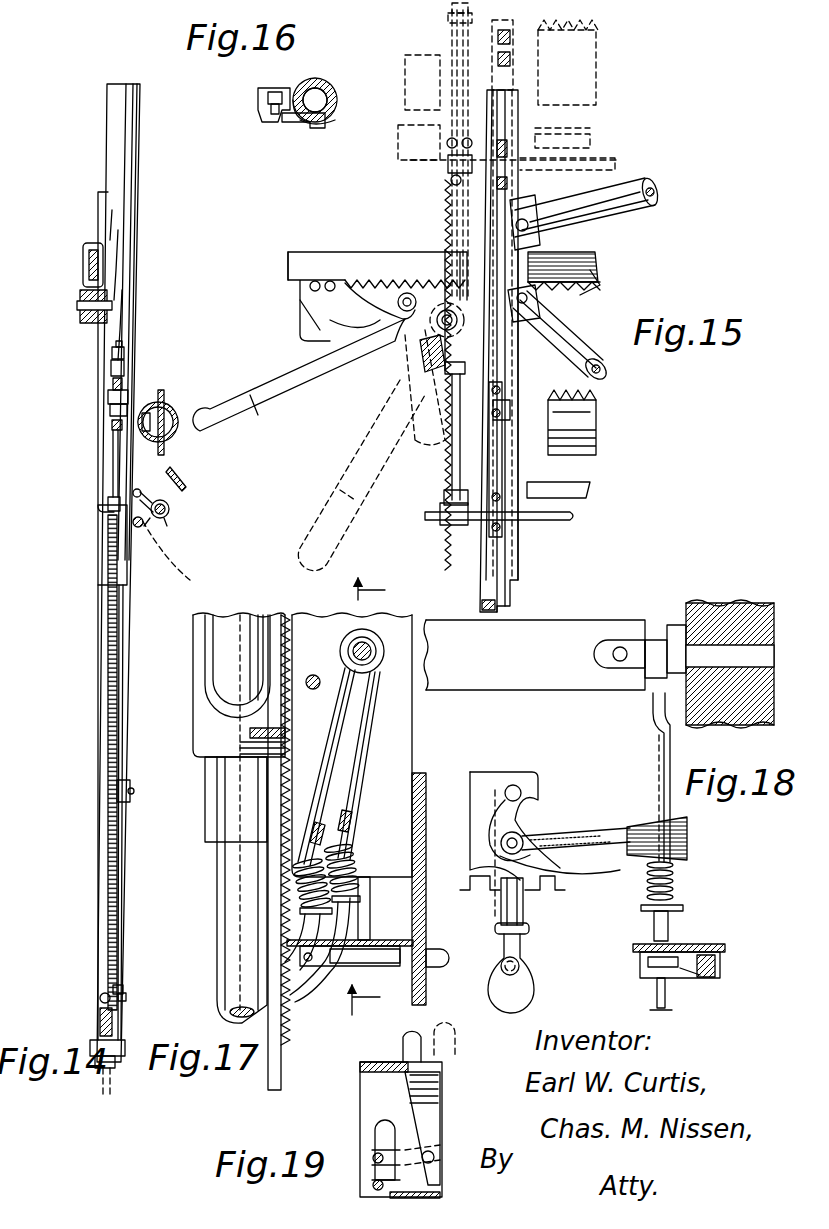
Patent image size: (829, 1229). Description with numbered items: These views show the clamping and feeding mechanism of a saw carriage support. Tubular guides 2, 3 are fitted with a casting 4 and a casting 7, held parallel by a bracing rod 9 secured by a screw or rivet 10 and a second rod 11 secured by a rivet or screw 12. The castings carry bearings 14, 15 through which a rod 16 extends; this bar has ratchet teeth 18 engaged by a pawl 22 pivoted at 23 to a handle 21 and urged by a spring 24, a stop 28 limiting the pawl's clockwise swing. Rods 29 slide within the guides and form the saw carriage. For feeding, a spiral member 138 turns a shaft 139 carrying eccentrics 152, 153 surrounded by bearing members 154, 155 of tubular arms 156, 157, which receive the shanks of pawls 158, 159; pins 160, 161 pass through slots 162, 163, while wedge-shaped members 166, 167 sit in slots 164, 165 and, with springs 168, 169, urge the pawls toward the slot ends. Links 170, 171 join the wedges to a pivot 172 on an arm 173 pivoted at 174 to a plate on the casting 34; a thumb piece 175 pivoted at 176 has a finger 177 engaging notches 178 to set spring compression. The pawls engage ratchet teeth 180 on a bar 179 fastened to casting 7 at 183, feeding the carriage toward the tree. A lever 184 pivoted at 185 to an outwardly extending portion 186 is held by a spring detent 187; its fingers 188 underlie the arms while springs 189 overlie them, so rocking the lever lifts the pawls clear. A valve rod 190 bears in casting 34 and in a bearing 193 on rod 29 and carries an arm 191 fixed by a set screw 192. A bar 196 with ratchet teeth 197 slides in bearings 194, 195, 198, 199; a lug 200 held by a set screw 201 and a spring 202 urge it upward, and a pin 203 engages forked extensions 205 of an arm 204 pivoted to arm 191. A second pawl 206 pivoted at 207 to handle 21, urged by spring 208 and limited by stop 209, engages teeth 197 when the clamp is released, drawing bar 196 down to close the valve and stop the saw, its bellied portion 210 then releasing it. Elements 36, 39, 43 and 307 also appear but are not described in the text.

In FIG. 14, the tubular guide 2 is at (135, 173).
In FIG. 16, the tubular guide 2 is at (335, 100).
In FIG. 15, the tubular guide 2 is at (520, 128).
In FIG. 17, the tubular guide 3 is at (210, 803).
In FIG. 14, the casting 4 is at (97, 218).
In FIG. 16, the casting 4 is at (338, 108).
In FIG. 15, the casting 4 is at (520, 478).
In FIG. 17, the casting 7 is at (200, 744).
In FIG. 15, the bracing rod 9 is at (640, 195).
In FIG. 15, the screw or rivet 10 is at (578, 205).
In FIG. 17, the rod 11 is at (230, 638).
In FIG. 15, the rivet or screw 12 is at (548, 333).
In FIG. 14, the bearing 14 is at (97, 245).
In FIG. 15, the bearing 14 is at (540, 265).
In FIG. 14, the bearing 15 is at (78, 305).
In FIG. 15, the bearing 15 is at (520, 272).
In FIG. 14, the rod 16 is at (90, 262).
In FIG. 15, the rod 16 is at (596, 270).
In FIG. 15, the ratchet teeth 18 is at (592, 282).
In FIG. 17, the ratchet teeth 18 is at (380, 1000).
In FIG. 15, the handle 21 is at (300, 345).
In FIG. 15, the pawl 22 is at (370, 290).
In FIG. 15, the pivot 23 is at (410, 295).
In FIG. 15, the spring 24 is at (375, 308).
In FIG. 15, the stop 28 is at (445, 310).
In FIG. 14, the rod 29 is at (118, 945).
In FIG. 16, the rod 29 is at (325, 95).
In FIG. 15, the rod 29 is at (515, 26).
In FIG. 17, the rod 29 is at (225, 927).
In FIG. 17, the casting 34 is at (408, 733).
In FIG. 18, the casting 34 is at (735, 614).
In FIG. 14, the clamp block 36 is at (178, 410).
In FIG. 15, the clamp block 36 is at (592, 80).
In FIG. 17, the side plate 39 is at (420, 878).
In FIG. 14, the serrated bar 43 is at (162, 395).
In FIG. 15, the serrated bar 43 is at (570, 55).
In FIG. 14, the spiral member 138 is at (185, 492).
In FIG. 15, the spiral member 138 is at (585, 135).
In FIG. 18, the spiral member 138 is at (630, 640).
In FIG. 18, the shaft 139 is at (655, 640).
In FIG. 17, the eccentric 152 is at (352, 645).
In FIG. 17, the eccentric 153 is at (352, 650).
In FIG. 18, the bearing member 154 is at (700, 625).
In FIG. 18, the bearing member 155 is at (662, 642).
In FIG. 18, the arm 156 is at (658, 740).
In FIG. 18, the arm 157 is at (658, 716).
In FIG. 17, the pawl 158 is at (322, 985).
In FIG. 18, the pawl 158 is at (657, 986).
In FIG. 19, the pawl 158 is at (375, 1158).
In FIG. 17, the pawl 159 is at (297, 990).
In FIG. 19, the pawl 159 is at (375, 1186).
In FIG. 17, the pin 160 is at (352, 915).
In FIG. 18, the pin 160 is at (684, 907).
In FIG. 17, the pin 161 is at (300, 928).
In FIG. 17, the slot 162 is at (345, 898).
In FIG. 17, the slot 163 is at (330, 896).
In FIG. 17, the slot 164 is at (346, 810).
In FIG. 17, the slot 165 is at (333, 815).
In FIG. 17, the wedge-shaped member 166 is at (352, 830).
In FIG. 18, the wedge-shaped member 166 is at (640, 825).
In FIG. 17, the wedge-shaped member 167 is at (303, 857).
In FIG. 18, the wedge-shaped member 167 is at (656, 864).
In FIG. 17, the spring 168 is at (360, 868).
In FIG. 18, the spring 168 is at (674, 880).
In FIG. 17, the spring 169 is at (300, 876).
In FIG. 18, the link 170 is at (586, 830).
In FIG. 18, the link 171 is at (615, 852).
In FIG. 18, the pivot 172 is at (528, 838).
In FIG. 18, the arm 173 is at (525, 825).
In FIG. 18, the pivot 174 is at (514, 790).
In FIG. 18, the thumb piece 175 is at (528, 955).
In FIG. 18, the pivot 176 is at (531, 928).
In FIG. 18, the finger 177 is at (526, 905).
In FIG. 18, the notches 178 is at (470, 888).
In FIG. 17, the bar 179 is at (282, 1086).
In FIG. 17, the ratchet teeth 180 is at (285, 1062).
In FIG. 17, the fastening point 183 is at (250, 718).
In FIG. 17, the lever 184 is at (435, 950).
In FIG. 18, the lever 184 is at (717, 962).
In FIG. 19, the lever 184 is at (445, 1088).
In FIG. 18, the pivot 185 is at (718, 978).
In FIG. 19, the pivot 185 is at (445, 1145).
In FIG. 18, the outwardly extending portion 186 is at (684, 942).
In FIG. 19, the outwardly extending portion 186 is at (360, 1108).
In FIG. 19, the spring detent 187 is at (445, 1048).
In FIG. 17, the fingers 188 is at (298, 956).
In FIG. 18, the fingers 188 is at (696, 972).
In FIG. 19, the fingers 188 is at (362, 1112).
In FIG. 17, the springs 189 is at (355, 962).
In FIG. 18, the springs 189 is at (648, 962).
In FIG. 19, the springs 189 is at (372, 1152).
In FIG. 14, the rod 190 is at (170, 510).
In FIG. 15, the rod 190 is at (610, 165).
In FIG. 17, the rod 190 is at (313, 690).
In FIG. 14, the arm 191 is at (165, 478).
In FIG. 15, the arm 191 is at (410, 160).
In FIG. 14, the set screw 192 is at (150, 525).
In FIG. 15, the bearing 193 is at (507, 172).
In FIG. 14, the bearing 194 is at (110, 399).
In FIG. 16, the bearing 194 is at (300, 130).
In FIG. 15, the bearing 194 is at (465, 50).
In FIG. 14, the bearing 195 is at (82, 1052).
In FIG. 14, the bar 196 is at (115, 465).
In FIG. 16, the bar 196 is at (262, 108).
In FIG. 15, the bar 196 is at (445, 120).
In FIG. 14, the ratchet teeth 197 is at (108, 627).
In FIG. 15, the ratchet teeth 197 is at (445, 560).
In FIG. 14, the bearing 198 is at (110, 415).
In FIG. 16, the bearing 198 is at (305, 95).
In FIG. 15, the bearing 198 is at (574, 411).
In FIG. 14, the bearing 199 is at (112, 505).
In FIG. 15, the bearing 199 is at (440, 514).
In FIG. 14, the lug 200 is at (127, 1000).
In FIG. 14, the set screw 201 is at (100, 1000).
In FIG. 14, the spring 202 is at (120, 1017).
In FIG. 14, the pin 203 is at (125, 360).
In FIG. 14, the arm 204 is at (128, 370).
In FIG. 16, the arm 204 is at (272, 125).
In FIG. 15, the arm 204 is at (452, 30).
In FIG. 14, the forked extensions 205 is at (112, 367).
In FIG. 16, the forked extensions 205 is at (285, 90).
In FIG. 15, the forked extensions 205 is at (444, 496).
In FIG. 15, the second pawl 206 is at (448, 372).
In FIG. 15, the pivot 207 is at (380, 328).
In FIG. 15, the spring 208 is at (405, 392).
In FIG. 15, the stop 209 is at (445, 290).
In FIG. 15, the bellied portion 210 is at (528, 300).
In FIG. 14, the stop block 307 is at (127, 783).